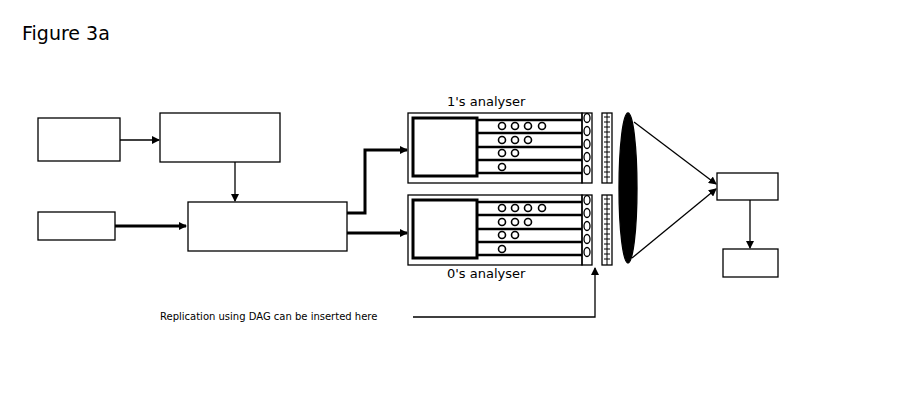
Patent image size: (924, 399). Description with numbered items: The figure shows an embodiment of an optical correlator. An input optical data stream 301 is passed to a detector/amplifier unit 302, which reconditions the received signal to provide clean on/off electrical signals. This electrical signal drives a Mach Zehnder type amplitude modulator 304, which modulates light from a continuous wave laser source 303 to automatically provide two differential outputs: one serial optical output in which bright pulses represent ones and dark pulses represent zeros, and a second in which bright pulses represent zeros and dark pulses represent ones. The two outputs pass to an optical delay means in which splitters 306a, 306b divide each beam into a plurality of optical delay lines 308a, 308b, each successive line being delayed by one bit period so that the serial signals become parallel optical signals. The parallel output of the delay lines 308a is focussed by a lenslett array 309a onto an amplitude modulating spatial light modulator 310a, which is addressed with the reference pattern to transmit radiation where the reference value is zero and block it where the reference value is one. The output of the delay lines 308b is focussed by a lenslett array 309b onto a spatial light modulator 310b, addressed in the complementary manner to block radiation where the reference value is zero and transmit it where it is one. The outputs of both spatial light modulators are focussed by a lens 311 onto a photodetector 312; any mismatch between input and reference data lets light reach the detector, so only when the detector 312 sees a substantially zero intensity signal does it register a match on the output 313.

The input optical data stream 301 is at (106, 118).
The detector/amplifier unit 302 is at (200, 113).
The continuous wave laser source 303 is at (103, 241).
The Mach Zehnder type amplitude modulator 304 is at (305, 202).
The splitter 306a is at (452, 126).
The splitter 306b is at (440, 247).
The optical delay lines 308a is at (524, 114).
The optical delay lines 308b is at (536, 243).
The lenslett array 309a is at (587, 112).
The lenslett array 309b is at (587, 263).
The amplitude modulating spatial light modulator 310a is at (607, 152).
The amplitude modulating spatial light modulator 310b is at (607, 260).
The lens 311 is at (633, 125).
The photodetector 312 is at (747, 173).
The output 313 is at (731, 274).